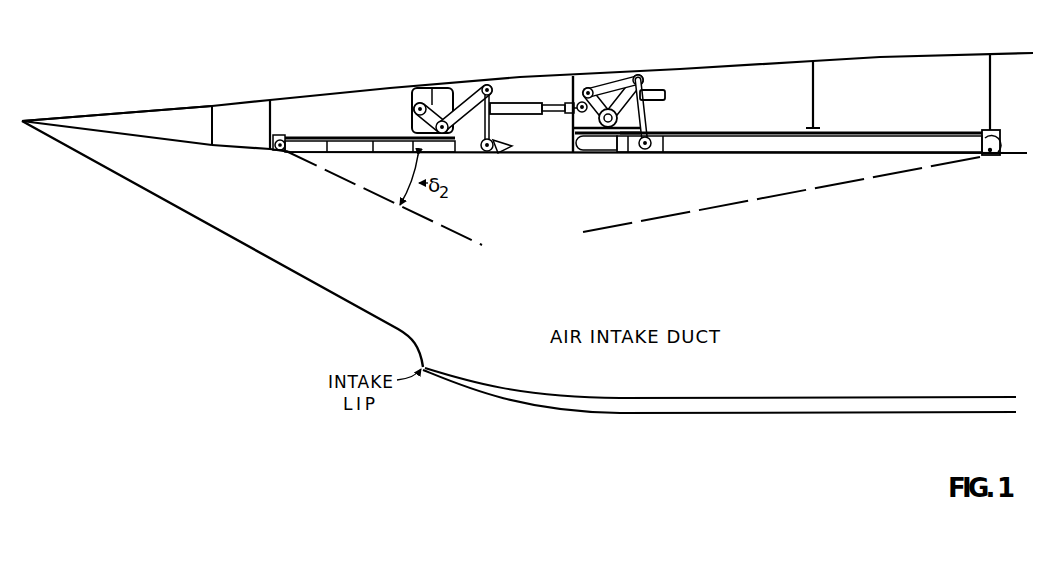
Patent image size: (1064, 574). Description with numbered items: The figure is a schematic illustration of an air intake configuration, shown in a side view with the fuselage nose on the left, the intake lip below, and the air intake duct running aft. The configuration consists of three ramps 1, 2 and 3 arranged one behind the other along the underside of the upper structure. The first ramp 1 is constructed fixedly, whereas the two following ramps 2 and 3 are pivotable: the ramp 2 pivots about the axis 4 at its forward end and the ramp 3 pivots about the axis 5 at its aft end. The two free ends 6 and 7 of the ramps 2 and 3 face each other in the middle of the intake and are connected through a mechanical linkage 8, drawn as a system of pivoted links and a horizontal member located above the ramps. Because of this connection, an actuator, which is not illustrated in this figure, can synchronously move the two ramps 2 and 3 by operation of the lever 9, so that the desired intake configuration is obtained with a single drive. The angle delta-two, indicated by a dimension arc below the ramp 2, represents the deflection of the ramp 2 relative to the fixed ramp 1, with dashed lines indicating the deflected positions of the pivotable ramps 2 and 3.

The ramp 1 is at (195, 147).
The ramp 2 is at (383, 155).
The ramp 3 is at (820, 155).
The axis 4 is at (277, 152).
The axis 5 is at (992, 153).
The free end 6 is at (478, 156).
The free end 7 is at (603, 155).
The mechanical linkage 8 is at (527, 101).
The lever 9 is at (654, 89).